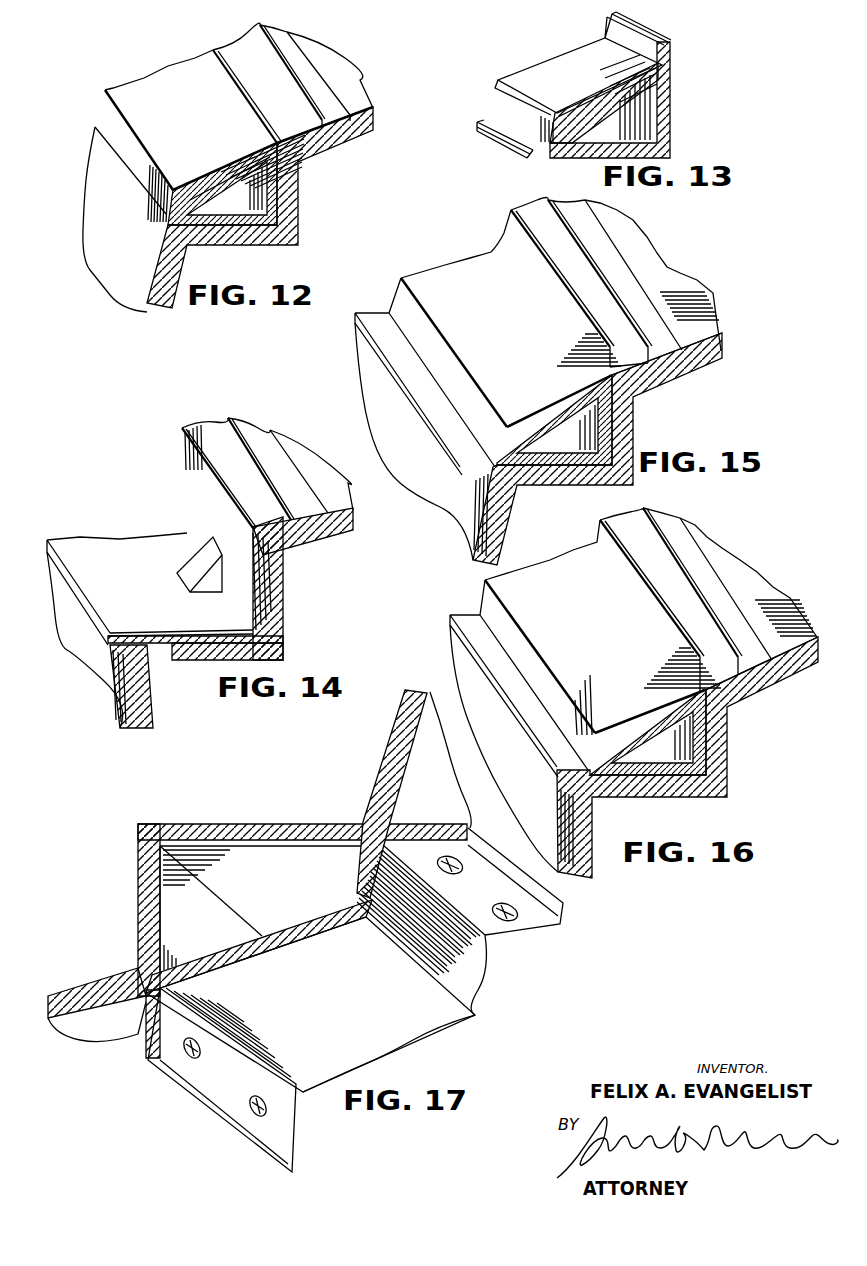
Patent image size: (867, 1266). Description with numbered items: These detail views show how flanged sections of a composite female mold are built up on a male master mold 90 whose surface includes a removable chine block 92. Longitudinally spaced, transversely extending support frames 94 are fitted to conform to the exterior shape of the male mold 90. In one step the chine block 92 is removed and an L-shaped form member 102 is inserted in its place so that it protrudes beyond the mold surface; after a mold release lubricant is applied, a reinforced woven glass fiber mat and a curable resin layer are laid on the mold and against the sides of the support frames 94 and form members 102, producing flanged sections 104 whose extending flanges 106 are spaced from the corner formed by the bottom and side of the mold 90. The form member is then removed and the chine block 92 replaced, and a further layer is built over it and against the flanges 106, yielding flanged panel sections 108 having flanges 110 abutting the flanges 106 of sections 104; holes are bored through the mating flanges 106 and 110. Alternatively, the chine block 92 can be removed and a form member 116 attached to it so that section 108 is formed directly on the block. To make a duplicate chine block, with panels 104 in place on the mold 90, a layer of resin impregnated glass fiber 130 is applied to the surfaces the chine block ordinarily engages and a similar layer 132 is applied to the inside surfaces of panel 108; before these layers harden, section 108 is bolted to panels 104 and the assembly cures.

In FIG. 12, the male mold 90 is at (118, 243).
In FIG. 15, the male mold 90 is at (497, 520).
In FIG. 16, the male mold 90 is at (592, 820).
In FIG. 17, the male mold 90 is at (390, 756).
In FIG. 12, the chine block 92 is at (222, 162).
In FIG. 13, the chine block 92 is at (667, 128).
In FIG. 15, the chine block 92 is at (603, 433).
In FIG. 16, the chine block 92 is at (713, 732).
In FIG. 17, the support frame 94 is at (306, 840).
In FIG. 14, the L-shaped form member 102 is at (270, 617).
In FIG. 14, the flanged section 104 is at (348, 495).
In FIG. 15, the flanged section 104 is at (675, 288).
In FIG. 16, the flanged section 104 is at (742, 568).
In FIG. 17, the flanged section 104 is at (442, 787).
In FIG. 14, the extending flange 106 is at (297, 538).
In FIG. 15, the extending flange 106 is at (578, 295).
In FIG. 16, the extending flange 106 is at (697, 634).
In FIG. 13, the flanged panel section 108 is at (610, 78).
In FIG. 16, the flanged panel section 108 is at (634, 696).
In FIG. 17, the flanged panel section 108 is at (378, 1010).
In FIG. 13, the flange 110 is at (645, 47).
In FIG. 16, the flange 110 is at (670, 633).
In FIG. 13, the form member 116 is at (667, 92).
In FIG. 17, the layer of resin impregnated glass fiber 130 is at (246, 896).
In FIG. 17, the layer of resin impregnated glass fiber 132 is at (360, 887).